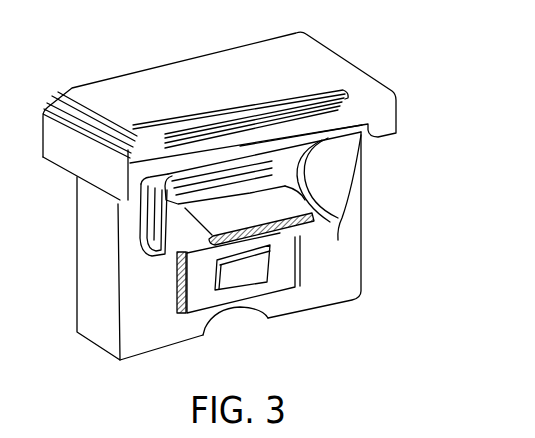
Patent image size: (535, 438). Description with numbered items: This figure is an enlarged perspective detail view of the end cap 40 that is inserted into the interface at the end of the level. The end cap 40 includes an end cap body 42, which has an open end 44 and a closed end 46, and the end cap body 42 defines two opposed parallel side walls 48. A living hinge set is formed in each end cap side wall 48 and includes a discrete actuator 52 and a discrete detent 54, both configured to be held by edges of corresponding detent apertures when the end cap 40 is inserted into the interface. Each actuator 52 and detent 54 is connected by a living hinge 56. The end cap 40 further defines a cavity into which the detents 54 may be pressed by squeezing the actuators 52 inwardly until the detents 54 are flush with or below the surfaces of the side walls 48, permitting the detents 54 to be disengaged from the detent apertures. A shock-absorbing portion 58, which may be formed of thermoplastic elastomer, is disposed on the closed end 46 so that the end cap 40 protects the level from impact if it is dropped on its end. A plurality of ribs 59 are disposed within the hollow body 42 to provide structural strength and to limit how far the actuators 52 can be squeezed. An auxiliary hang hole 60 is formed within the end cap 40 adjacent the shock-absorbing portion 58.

The end cap 40 is at (368, 47).
The end cap body 42 is at (352, 237).
The open end 44 is at (217, 323).
The closed end 46 is at (330, 137).
The side wall 48 is at (343, 263).
The actuator 52 is at (188, 177).
The detent 54 is at (240, 270).
The living hinge 56 is at (197, 278).
The shock-absorbing portion 58 is at (263, 62).
The ribs 59 is at (263, 168).
The auxiliary hang hole 60 is at (247, 197).